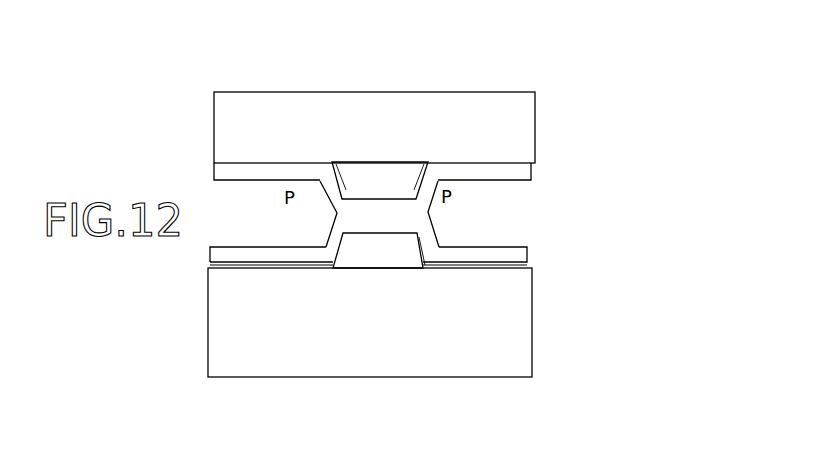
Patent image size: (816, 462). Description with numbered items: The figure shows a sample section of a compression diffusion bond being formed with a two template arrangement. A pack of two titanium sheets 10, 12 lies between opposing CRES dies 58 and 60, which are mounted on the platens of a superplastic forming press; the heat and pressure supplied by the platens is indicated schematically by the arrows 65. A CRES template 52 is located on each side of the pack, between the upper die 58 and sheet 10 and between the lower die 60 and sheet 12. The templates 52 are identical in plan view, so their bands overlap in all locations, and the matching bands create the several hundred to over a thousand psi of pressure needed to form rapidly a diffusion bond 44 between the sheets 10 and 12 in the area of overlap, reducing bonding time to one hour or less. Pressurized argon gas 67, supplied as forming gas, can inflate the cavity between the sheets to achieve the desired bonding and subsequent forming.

The arrow 65 is at (515, 76).
The die 58 is at (515, 117).
The sheet 10 is at (531, 173).
The CRES template 52 is at (395, 180).
The diffusion bond 44 is at (336, 214).
The pressurized argon gas 67 is at (483, 202).
The sheet 12 is at (527, 256).
The die 60 is at (518, 333).